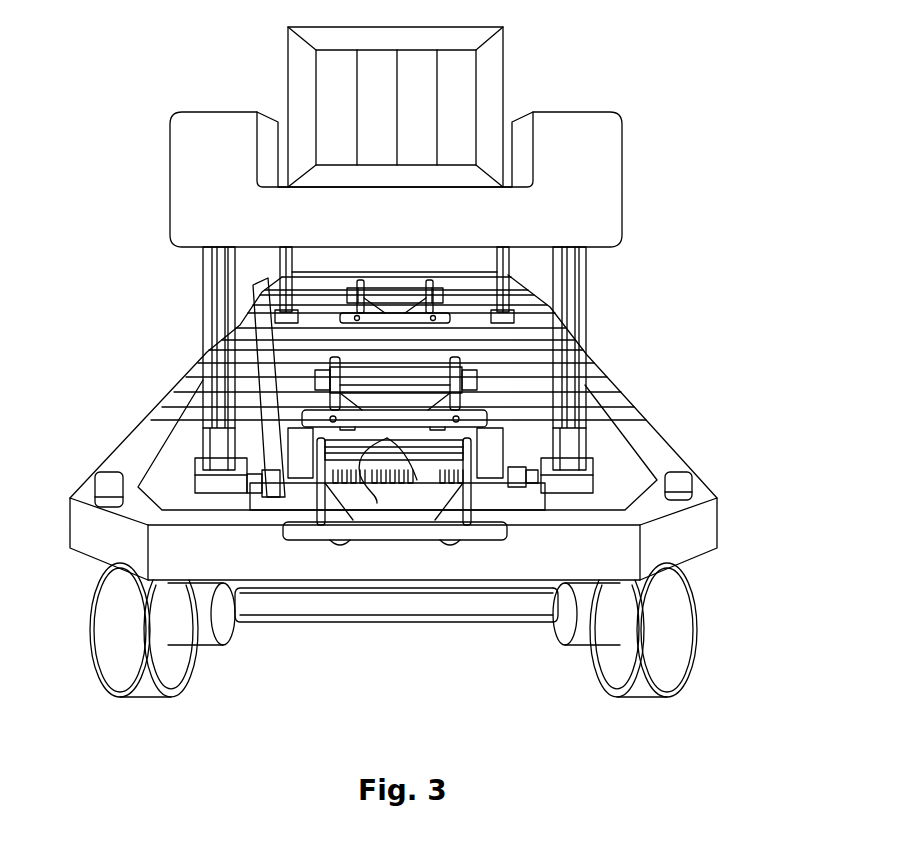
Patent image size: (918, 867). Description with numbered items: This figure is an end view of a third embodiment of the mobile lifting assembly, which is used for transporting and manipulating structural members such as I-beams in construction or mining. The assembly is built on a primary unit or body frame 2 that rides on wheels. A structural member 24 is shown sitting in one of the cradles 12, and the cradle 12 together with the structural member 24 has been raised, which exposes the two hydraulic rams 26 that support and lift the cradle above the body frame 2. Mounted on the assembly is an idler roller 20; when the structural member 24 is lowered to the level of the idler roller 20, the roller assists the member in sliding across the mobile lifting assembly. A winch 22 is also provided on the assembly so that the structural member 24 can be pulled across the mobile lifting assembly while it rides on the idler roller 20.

The body frame 2 is at (142, 432).
The cradle 12 is at (590, 160).
The idler roller 20 is at (410, 380).
The winch 22 is at (503, 433).
The structural member 24 is at (455, 78).
The hydraulic rams 26 is at (210, 315).